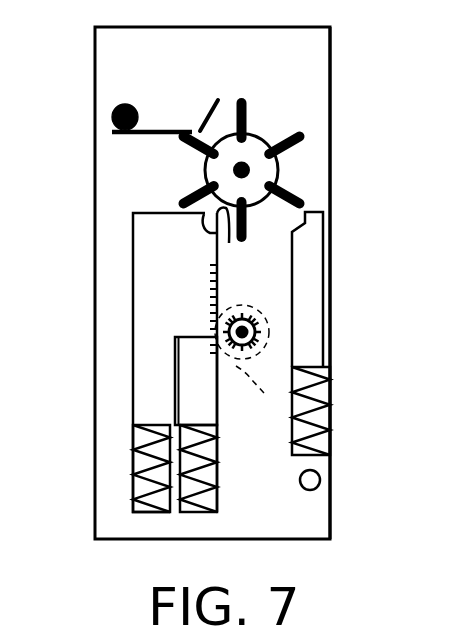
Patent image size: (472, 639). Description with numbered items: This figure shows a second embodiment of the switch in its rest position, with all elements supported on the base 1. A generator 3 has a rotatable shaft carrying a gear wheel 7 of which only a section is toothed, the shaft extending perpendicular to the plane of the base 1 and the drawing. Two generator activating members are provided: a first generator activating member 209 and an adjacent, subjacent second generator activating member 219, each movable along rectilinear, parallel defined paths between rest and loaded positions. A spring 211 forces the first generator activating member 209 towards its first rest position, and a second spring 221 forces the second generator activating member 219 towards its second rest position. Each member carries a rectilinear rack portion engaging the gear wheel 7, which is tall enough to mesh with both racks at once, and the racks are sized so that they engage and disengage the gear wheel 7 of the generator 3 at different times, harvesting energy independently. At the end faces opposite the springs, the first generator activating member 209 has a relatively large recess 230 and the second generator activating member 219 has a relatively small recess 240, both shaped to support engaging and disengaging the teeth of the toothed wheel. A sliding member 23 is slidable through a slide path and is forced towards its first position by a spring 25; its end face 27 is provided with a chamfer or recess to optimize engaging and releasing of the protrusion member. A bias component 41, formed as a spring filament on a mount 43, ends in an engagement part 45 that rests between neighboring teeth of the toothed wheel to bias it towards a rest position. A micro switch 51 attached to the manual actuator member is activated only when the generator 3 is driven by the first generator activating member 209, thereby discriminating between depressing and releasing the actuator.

The base 1 is at (314, 72).
The generator 3 is at (258, 396).
The gear wheel 7 is at (256, 318).
The sliding member 23 is at (313, 288).
The spring 25 is at (322, 412).
The end face 27 is at (322, 210).
The bias component 41 is at (151, 130).
The mount 43 is at (113, 116).
The engagement part 45 is at (220, 99).
The micro switch 51 is at (322, 477).
The first generator activating member 209 is at (138, 247).
The spring 211 is at (138, 477).
The second generator activating member 219 is at (200, 405).
The second spring 221 is at (206, 487).
The recess 230 is at (203, 222).
The recess 240 is at (241, 360).